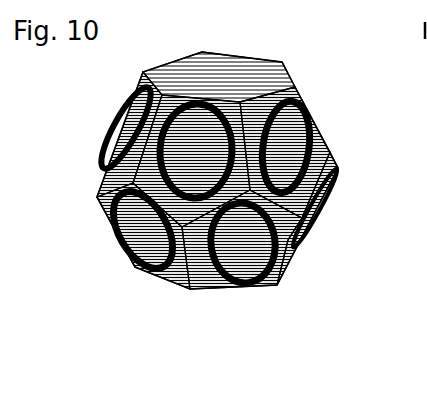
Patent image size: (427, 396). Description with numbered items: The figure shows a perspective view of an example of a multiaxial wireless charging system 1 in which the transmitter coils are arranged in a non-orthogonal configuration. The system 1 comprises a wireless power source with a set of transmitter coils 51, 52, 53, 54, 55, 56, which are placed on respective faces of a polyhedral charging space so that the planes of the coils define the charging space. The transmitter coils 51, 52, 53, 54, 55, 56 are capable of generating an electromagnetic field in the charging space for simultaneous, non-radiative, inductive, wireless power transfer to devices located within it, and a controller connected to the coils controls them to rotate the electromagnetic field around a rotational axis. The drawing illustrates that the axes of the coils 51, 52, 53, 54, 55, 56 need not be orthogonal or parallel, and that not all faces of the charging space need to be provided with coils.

The system 1 is at (345, 343).
The transmitter coil 51 is at (100, 140).
The transmitter coil 52 is at (135, 257).
The transmitter coil 53 is at (228, 266).
The transmitter coil 54 is at (302, 125).
The transmitter coil 55 is at (205, 100).
The transmitter coil 56 is at (316, 223).